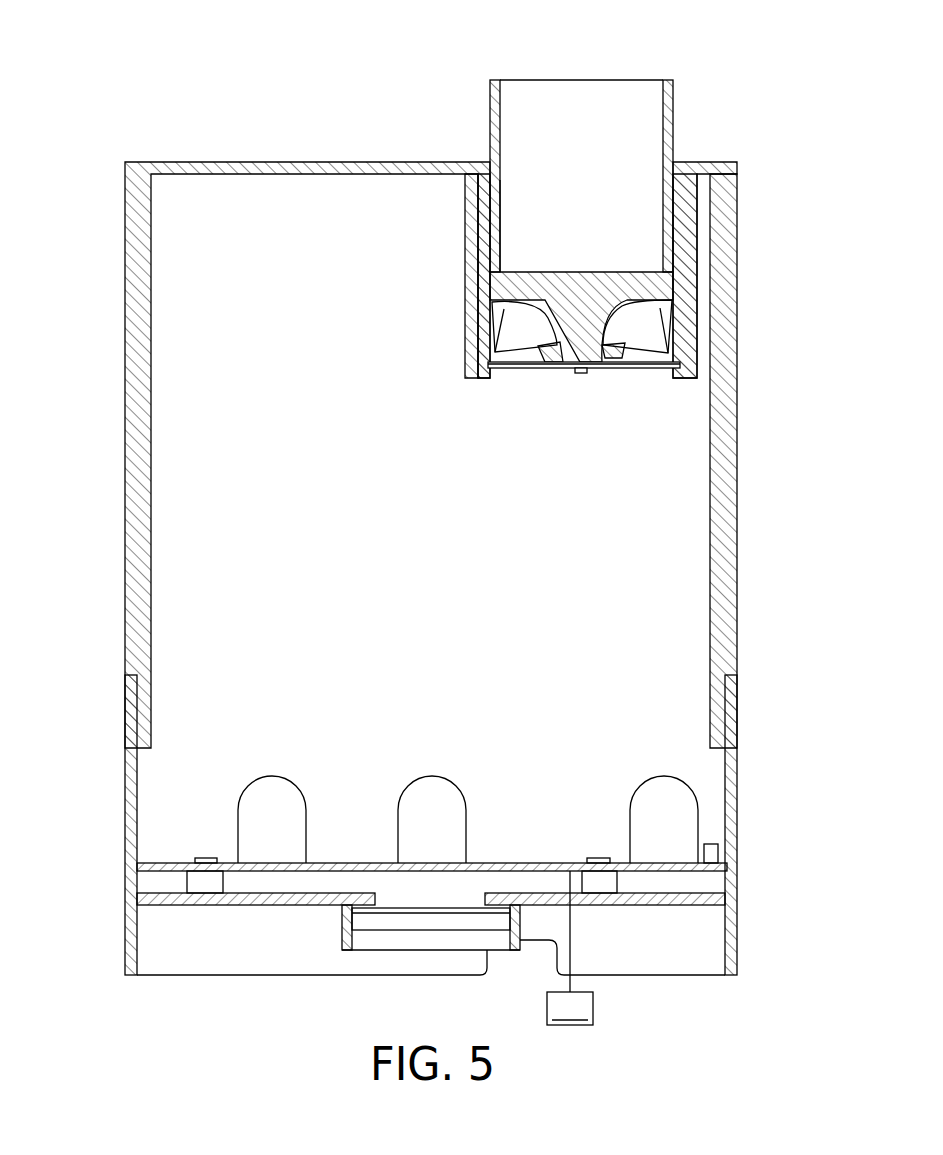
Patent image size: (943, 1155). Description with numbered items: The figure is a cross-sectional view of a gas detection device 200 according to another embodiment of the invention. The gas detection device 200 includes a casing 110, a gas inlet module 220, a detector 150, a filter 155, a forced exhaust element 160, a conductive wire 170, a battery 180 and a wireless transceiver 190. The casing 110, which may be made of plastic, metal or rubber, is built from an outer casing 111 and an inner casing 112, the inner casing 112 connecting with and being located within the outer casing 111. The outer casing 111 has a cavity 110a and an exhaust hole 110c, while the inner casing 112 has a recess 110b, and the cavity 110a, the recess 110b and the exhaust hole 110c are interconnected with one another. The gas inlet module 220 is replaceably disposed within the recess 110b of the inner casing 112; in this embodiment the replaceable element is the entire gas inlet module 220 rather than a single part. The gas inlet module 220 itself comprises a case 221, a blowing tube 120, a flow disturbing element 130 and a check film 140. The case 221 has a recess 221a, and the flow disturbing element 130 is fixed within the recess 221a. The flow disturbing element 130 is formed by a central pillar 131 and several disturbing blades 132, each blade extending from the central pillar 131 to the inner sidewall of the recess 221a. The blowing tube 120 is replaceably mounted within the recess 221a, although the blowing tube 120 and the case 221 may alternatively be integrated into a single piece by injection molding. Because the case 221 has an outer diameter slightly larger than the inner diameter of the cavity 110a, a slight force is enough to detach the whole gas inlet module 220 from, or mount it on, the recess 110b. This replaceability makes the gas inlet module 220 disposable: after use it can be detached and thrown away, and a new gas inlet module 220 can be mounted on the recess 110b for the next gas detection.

The gas detection device 200 is at (105, 148).
The casing 110 is at (797, 338).
The cavity 110a is at (680, 447).
The recess 110b is at (483, 223).
The exhaust hole 110c is at (382, 900).
The outer casing 111 is at (695, 355).
The inner casing 112 is at (722, 388).
The blowing tube 120 is at (673, 115).
The flow disturbing element 130 is at (797, 233).
The central pillar 131 is at (580, 272).
The disturbing blades 132 is at (537, 325).
The check film 140 is at (648, 367).
The detector 150 is at (640, 872).
The filter 155 is at (441, 912).
The forced exhaust element 160 is at (502, 942).
The conductive wire 170 is at (572, 955).
The battery 180 is at (570, 1008).
The wireless transceiver 190 is at (714, 856).
The gas inlet module 220 is at (688, 90).
The case 221 is at (470, 207).
The recess 221a is at (500, 192).